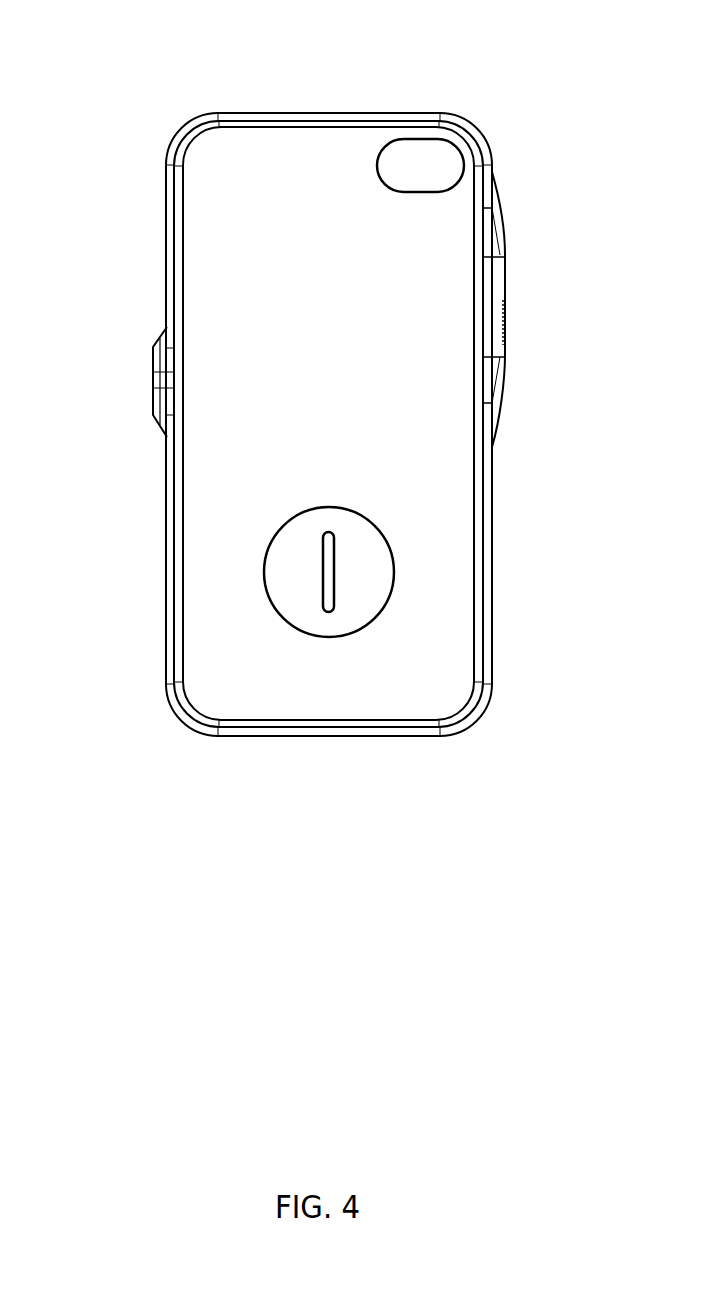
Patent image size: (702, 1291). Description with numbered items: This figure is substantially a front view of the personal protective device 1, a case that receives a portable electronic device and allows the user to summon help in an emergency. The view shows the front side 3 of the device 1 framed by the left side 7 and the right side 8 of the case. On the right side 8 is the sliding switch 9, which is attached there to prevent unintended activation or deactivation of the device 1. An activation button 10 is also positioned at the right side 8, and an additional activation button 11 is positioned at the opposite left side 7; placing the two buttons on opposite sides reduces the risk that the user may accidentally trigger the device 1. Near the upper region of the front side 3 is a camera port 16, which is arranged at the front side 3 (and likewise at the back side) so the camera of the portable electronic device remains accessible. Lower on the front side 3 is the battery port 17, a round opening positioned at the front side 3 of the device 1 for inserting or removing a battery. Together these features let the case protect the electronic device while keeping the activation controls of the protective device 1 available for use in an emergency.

The personal protective device 1 is at (108, 68).
The front side 3 is at (440, 520).
The left side 7 is at (160, 520).
The right side 8 is at (497, 440).
The sliding switch 9 is at (503, 332).
The activation button 10 is at (503, 262).
The additional activation button 11 is at (153, 378).
The camera port 16 is at (433, 158).
The battery port 17 is at (328, 595).